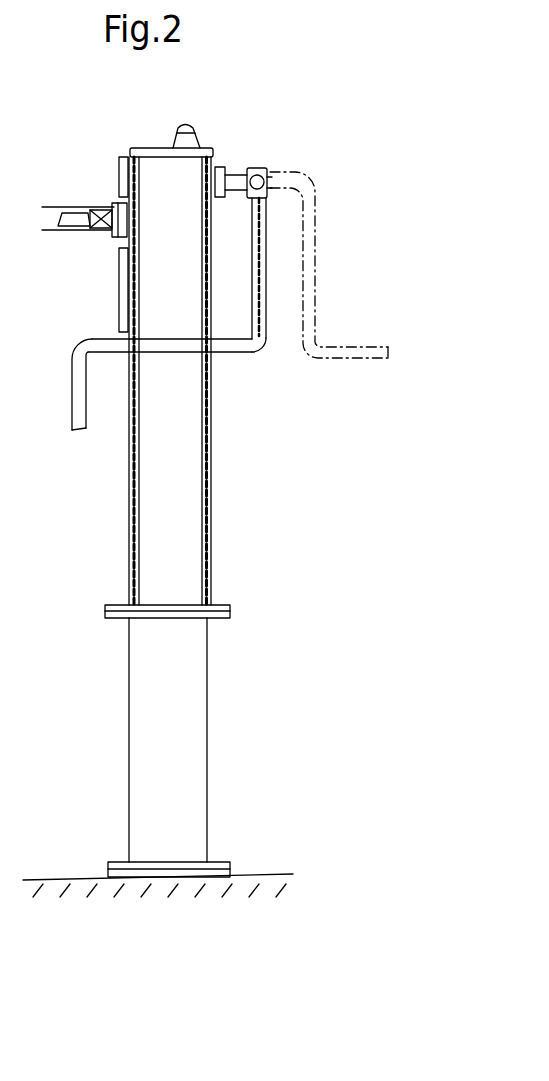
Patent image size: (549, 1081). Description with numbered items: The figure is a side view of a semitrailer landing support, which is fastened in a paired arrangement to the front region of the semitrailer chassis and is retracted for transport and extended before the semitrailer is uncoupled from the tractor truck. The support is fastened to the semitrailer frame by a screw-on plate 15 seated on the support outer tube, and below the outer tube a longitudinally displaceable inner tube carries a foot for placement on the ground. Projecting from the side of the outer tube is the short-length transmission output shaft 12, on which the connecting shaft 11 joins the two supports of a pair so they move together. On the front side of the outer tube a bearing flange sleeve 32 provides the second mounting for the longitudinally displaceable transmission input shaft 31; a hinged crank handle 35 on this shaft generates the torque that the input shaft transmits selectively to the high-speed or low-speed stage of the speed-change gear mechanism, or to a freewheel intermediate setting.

The connecting shaft 11 is at (53, 221).
The transmission output shaft 12 is at (88, 205).
The screw-on plate 15 is at (125, 290).
The transmission input shaft 31 is at (240, 177).
The bearing flange sleeve 32 is at (223, 160).
The hinged crank handle 35 is at (235, 353).